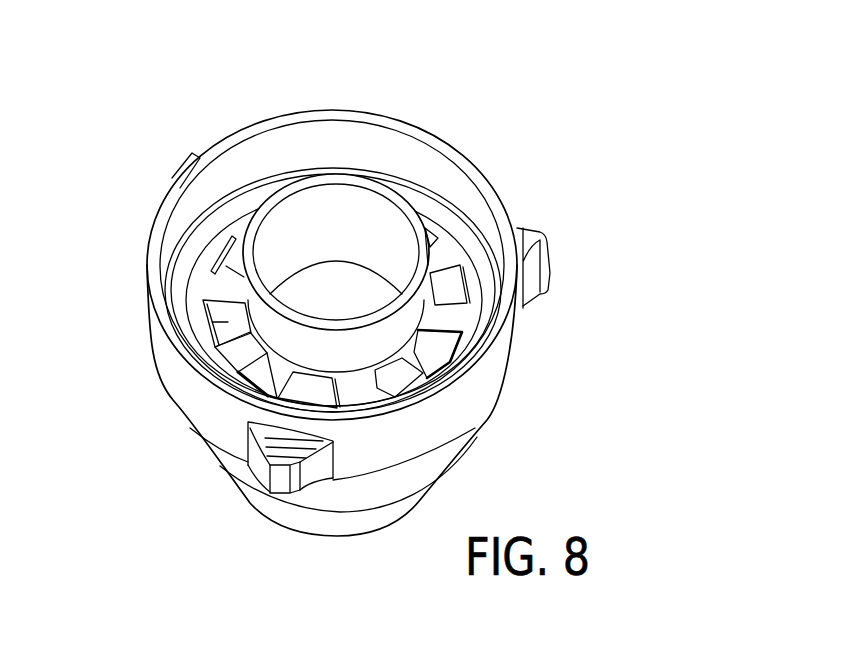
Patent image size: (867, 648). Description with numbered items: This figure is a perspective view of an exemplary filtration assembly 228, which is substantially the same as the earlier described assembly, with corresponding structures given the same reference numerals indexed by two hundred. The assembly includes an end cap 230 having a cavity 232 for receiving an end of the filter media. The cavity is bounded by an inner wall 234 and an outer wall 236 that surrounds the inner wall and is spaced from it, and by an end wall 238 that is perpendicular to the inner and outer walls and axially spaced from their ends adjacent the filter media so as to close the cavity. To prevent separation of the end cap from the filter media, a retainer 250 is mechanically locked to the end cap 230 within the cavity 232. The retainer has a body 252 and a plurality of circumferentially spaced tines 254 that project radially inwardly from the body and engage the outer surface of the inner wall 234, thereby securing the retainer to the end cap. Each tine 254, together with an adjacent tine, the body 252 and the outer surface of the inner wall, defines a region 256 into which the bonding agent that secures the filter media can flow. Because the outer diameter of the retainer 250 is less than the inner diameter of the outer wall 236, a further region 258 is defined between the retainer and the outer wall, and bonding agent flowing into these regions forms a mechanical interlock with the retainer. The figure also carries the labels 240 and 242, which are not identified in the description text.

The filtration assembly 228 is at (633, 114).
The end cap 230 is at (483, 155).
The cavity 232 is at (240, 167).
The inner wall 234 is at (383, 190).
The outer wall 236 is at (336, 110).
The end wall 238 is at (207, 327).
The locking tab 240 is at (550, 277).
The bore 242 is at (360, 300).
The retainer 250 is at (493, 303).
The body 252 is at (462, 357).
The tine 254 is at (443, 253).
The region 256 is at (242, 279).
The region 258 is at (174, 262).